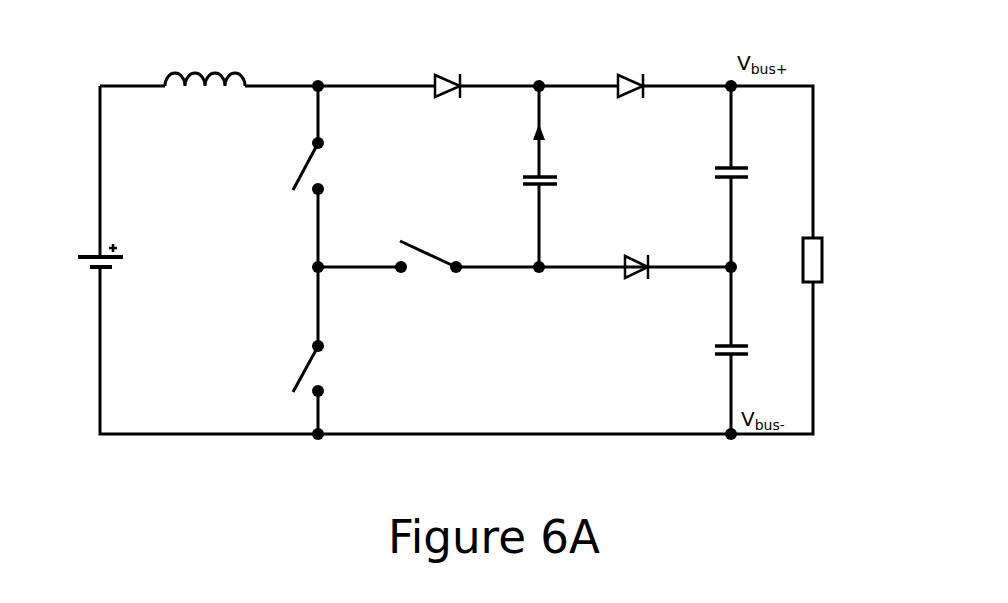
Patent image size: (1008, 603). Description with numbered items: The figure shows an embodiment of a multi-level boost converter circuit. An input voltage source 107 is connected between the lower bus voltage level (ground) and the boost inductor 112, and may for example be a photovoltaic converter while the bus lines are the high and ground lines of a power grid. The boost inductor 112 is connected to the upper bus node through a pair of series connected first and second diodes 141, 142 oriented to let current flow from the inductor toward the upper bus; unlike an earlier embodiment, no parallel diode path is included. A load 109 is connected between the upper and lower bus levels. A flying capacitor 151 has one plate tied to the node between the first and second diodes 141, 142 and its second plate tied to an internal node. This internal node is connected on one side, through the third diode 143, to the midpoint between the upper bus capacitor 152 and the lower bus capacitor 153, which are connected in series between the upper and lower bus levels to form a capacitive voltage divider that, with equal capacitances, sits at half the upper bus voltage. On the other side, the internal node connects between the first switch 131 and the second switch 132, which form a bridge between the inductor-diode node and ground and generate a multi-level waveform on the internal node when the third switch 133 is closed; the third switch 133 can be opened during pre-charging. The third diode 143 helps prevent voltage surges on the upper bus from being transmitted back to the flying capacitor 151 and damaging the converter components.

The input voltage source 107 is at (60, 246).
The load 109 is at (833, 275).
The boost inductor 112 is at (206, 100).
The switch T1 131 is at (336, 170).
The switch T2 132 is at (342, 374).
The switch S 133 is at (436, 238).
The diode D1 141 is at (423, 78).
The diode D2 142 is at (611, 77).
The diode D3 143 is at (619, 276).
The flying capacitor 151 is at (516, 183).
The capacitor Cbus+ 152 is at (753, 174).
The capacitor Cbus- 153 is at (721, 335).